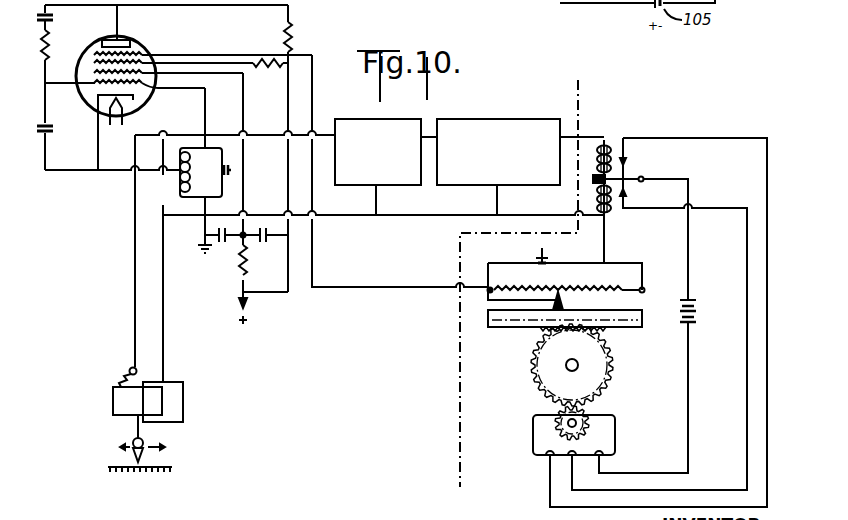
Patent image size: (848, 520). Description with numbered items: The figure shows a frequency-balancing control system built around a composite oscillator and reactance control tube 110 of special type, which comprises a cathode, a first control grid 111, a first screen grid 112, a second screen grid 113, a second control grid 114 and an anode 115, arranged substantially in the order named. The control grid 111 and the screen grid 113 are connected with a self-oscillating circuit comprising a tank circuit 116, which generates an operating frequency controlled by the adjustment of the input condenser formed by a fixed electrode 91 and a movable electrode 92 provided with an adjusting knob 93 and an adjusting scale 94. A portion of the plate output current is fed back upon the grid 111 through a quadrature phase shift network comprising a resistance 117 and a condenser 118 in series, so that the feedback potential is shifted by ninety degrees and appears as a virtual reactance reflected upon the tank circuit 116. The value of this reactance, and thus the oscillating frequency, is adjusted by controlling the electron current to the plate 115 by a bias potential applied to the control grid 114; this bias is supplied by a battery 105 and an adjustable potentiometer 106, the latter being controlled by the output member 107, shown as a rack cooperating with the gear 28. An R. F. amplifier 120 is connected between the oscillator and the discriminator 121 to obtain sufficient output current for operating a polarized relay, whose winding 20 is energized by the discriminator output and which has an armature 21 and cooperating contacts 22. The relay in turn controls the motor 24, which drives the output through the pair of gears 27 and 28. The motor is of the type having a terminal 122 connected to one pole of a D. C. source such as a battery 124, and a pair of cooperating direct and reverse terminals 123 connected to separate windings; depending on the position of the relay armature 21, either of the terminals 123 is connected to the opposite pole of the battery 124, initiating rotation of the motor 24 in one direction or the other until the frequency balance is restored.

The relay winding 20 is at (607, 150).
The relay armature 21 is at (630, 179).
The relay contacts 22 is at (623, 160).
The motor 24 is at (616, 441).
The gear 27 is at (590, 415).
The gear 28 is at (606, 399).
The fixed electrode 91 is at (180, 406).
The movable electrode 92 is at (113, 398).
The adjusting knob 93 is at (142, 440).
The adjusting scale 94 is at (152, 470).
The battery 105 is at (544, 263).
The adjustable potentiometer 106 is at (565, 289).
The output member 107 is at (594, 316).
The composite oscillator and reactance control tube 110 is at (146, 54).
The first control grid 111 is at (96, 97).
The first screen grid 112 is at (95, 73).
The second screen grid 113 is at (147, 62).
The second control grid 114 is at (103, 55).
The anode 115 is at (124, 41).
The tank circuit 116 is at (205, 172).
The resistance 117 is at (40, 43).
The condenser 118 is at (40, 124).
The R. F. amplifier 120 is at (370, 119).
The discriminator 121 is at (487, 119).
The motor terminal 122 is at (602, 452).
The direct and reverse terminals 123 is at (548, 455).
The battery 124 is at (690, 297).